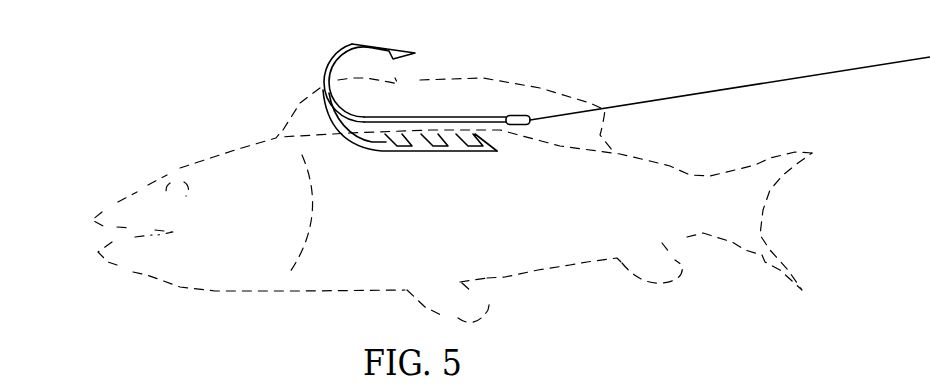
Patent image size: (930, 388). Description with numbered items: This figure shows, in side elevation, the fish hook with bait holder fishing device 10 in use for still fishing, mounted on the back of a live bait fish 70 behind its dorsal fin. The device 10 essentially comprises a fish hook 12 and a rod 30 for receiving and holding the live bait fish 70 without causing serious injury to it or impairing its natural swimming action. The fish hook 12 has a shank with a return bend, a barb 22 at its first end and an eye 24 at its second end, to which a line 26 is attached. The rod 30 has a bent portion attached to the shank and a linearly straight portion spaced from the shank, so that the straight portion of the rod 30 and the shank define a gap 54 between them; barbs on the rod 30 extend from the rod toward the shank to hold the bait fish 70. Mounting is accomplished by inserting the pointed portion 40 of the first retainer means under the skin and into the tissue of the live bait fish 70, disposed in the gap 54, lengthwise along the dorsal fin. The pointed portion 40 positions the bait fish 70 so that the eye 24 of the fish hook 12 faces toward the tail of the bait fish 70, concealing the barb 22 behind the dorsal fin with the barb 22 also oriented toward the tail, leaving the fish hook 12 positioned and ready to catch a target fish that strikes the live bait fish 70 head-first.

The fish hook with bait holder fishing device 10 is at (298, 72).
The fish hook 12 is at (487, 112).
The barb 22 is at (378, 52).
The eye 24 is at (520, 116).
The line 26 is at (660, 100).
The rod 30 is at (355, 149).
The pointed portion 40 is at (487, 152).
The gap 54 is at (410, 135).
The live bait fish 70 is at (210, 288).